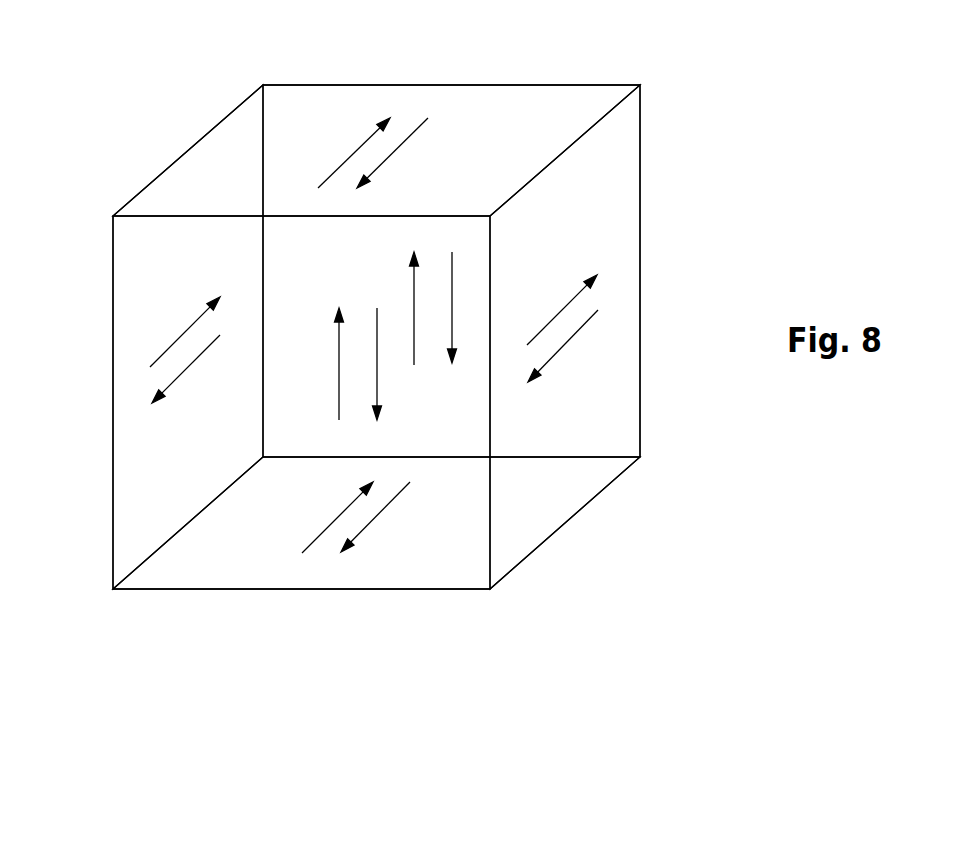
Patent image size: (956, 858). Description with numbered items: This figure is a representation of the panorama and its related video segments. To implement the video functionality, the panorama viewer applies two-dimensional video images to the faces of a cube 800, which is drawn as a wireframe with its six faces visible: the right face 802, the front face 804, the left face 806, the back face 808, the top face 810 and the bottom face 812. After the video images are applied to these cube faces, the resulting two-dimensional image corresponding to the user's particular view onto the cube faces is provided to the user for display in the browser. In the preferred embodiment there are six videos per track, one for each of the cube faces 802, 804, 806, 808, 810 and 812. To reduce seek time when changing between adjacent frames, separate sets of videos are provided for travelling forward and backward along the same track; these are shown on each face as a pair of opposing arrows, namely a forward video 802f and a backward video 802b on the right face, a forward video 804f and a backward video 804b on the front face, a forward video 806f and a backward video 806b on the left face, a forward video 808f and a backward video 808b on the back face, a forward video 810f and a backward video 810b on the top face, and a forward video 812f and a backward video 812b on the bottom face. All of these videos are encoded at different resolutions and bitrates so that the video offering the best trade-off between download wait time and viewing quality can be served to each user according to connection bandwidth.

The cube 800 is at (762, 110).
The cube face 802 is at (632, 306).
The forward video 802f is at (551, 322).
The backward video 802b is at (575, 330).
The cube face 804 is at (133, 480).
The forward video 804f is at (337, 337).
The backward video 804b is at (378, 380).
The cube face 806 is at (130, 255).
The forward video 806f is at (170, 346).
The backward video 806b is at (198, 360).
The cube face 808 is at (600, 163).
The forward video 808f is at (412, 292).
The backward video 808b is at (453, 280).
The cube face 810 is at (493, 100).
The forward video 810f is at (347, 163).
The backward video 810b is at (385, 158).
The cube face 812 is at (462, 607).
The forward video 812f is at (318, 532).
The backward video 812b is at (393, 500).